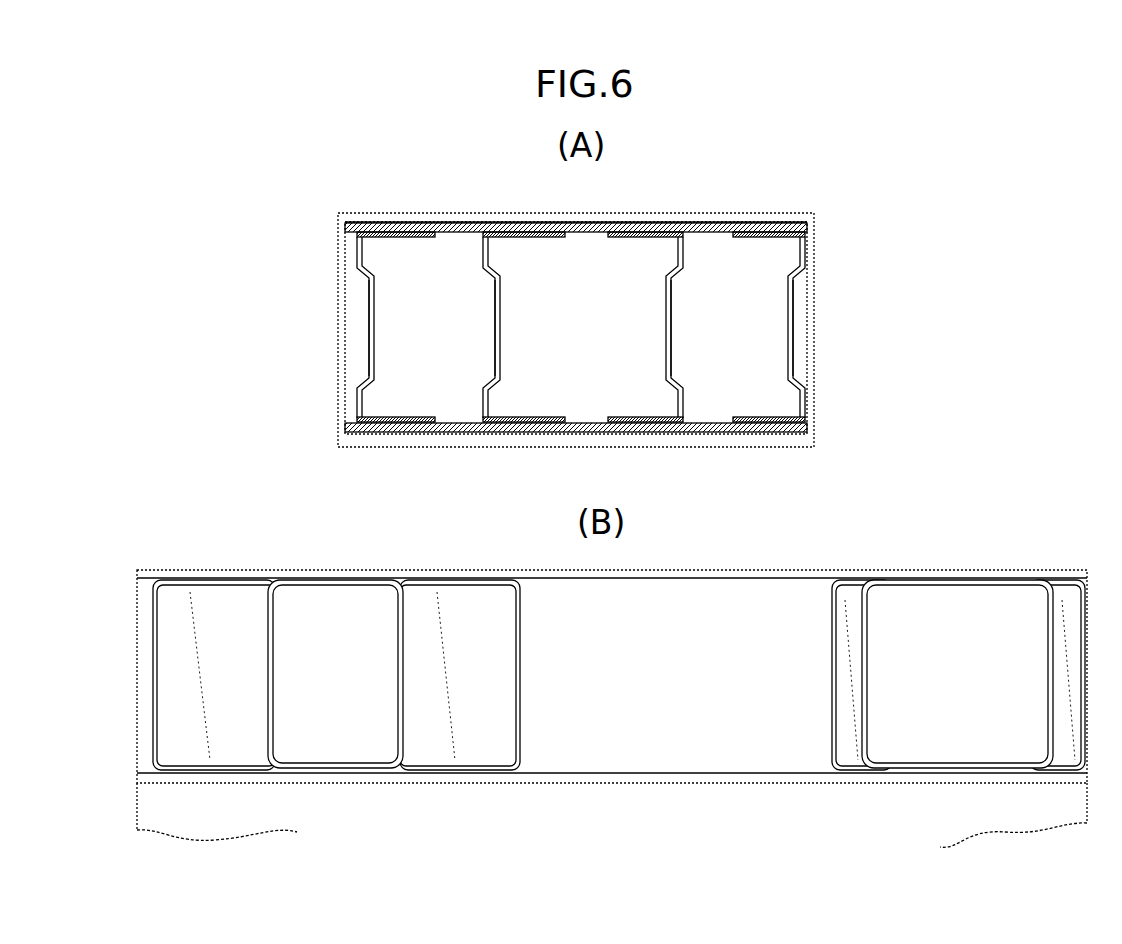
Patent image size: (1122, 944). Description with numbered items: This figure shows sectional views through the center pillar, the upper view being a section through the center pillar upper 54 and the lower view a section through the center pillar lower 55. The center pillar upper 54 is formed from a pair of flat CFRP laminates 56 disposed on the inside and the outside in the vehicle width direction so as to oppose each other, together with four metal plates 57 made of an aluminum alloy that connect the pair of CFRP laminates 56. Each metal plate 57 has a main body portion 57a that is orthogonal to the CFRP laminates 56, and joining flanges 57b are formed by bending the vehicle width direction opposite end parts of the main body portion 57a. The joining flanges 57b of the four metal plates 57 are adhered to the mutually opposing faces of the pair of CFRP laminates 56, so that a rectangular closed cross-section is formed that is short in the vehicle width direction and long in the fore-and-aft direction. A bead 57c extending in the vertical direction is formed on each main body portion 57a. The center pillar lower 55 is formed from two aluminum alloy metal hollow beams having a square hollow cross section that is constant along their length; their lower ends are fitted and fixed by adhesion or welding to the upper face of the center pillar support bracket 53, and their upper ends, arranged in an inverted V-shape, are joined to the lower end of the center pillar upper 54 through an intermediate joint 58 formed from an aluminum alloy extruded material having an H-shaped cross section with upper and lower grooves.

The center pillar support bracket 53 is at (520, 569).
The center pillar upper 54 is at (766, 200).
The center pillar lower 55 is at (228, 598).
The CFRP laminate 56 is at (592, 226).
The metal plate 57 is at (584, 302).
The main body portion 57a is at (485, 236).
The joining flange 57b is at (395, 239).
The bead 57c is at (369, 341).
The intermediate joint 58 is at (422, 212).